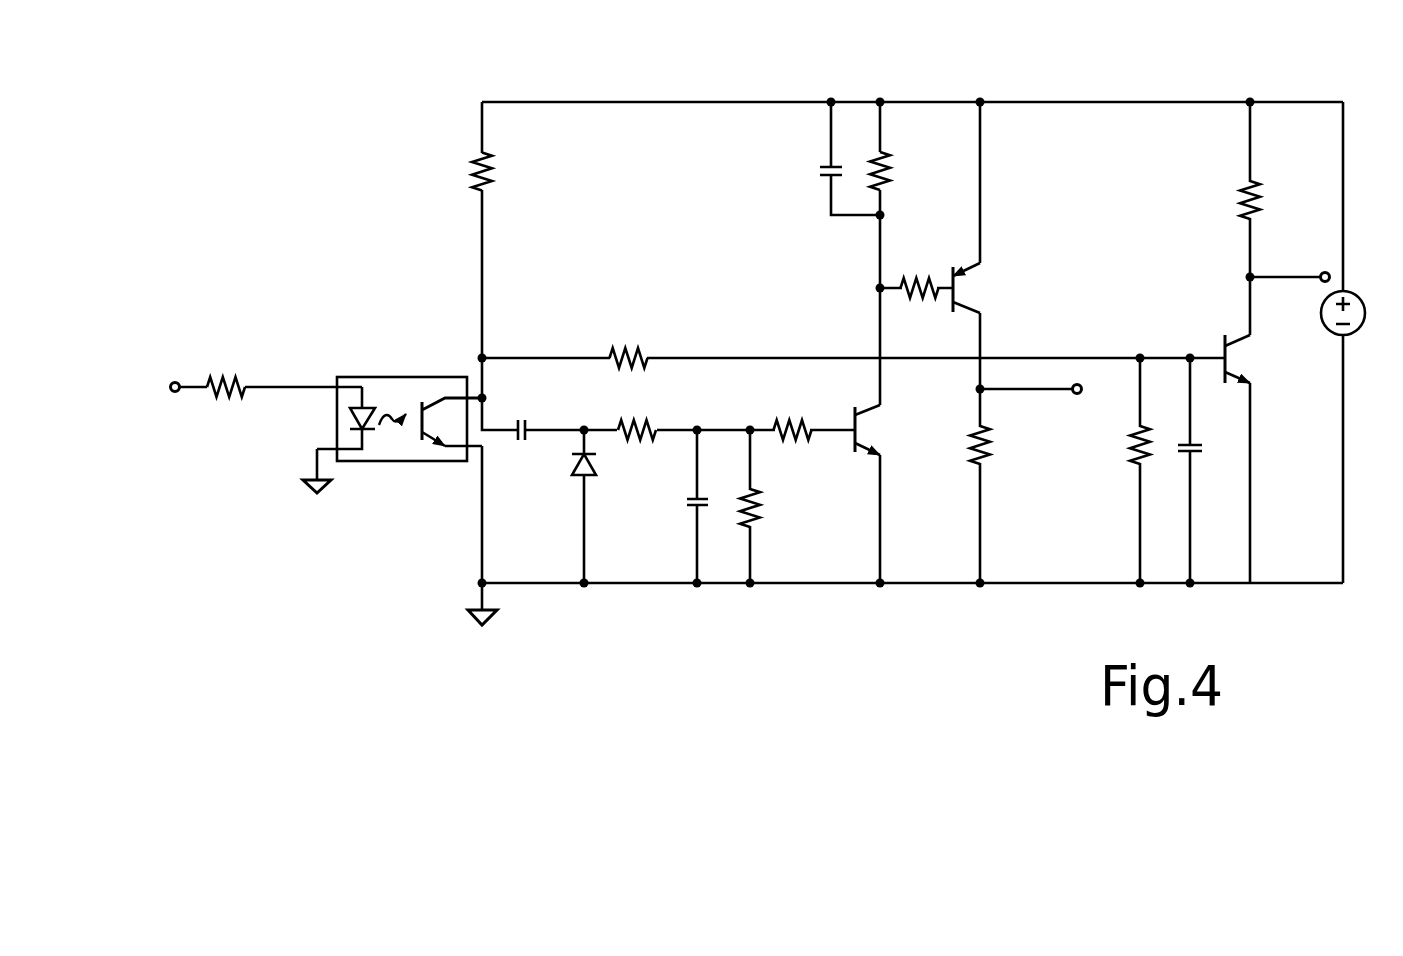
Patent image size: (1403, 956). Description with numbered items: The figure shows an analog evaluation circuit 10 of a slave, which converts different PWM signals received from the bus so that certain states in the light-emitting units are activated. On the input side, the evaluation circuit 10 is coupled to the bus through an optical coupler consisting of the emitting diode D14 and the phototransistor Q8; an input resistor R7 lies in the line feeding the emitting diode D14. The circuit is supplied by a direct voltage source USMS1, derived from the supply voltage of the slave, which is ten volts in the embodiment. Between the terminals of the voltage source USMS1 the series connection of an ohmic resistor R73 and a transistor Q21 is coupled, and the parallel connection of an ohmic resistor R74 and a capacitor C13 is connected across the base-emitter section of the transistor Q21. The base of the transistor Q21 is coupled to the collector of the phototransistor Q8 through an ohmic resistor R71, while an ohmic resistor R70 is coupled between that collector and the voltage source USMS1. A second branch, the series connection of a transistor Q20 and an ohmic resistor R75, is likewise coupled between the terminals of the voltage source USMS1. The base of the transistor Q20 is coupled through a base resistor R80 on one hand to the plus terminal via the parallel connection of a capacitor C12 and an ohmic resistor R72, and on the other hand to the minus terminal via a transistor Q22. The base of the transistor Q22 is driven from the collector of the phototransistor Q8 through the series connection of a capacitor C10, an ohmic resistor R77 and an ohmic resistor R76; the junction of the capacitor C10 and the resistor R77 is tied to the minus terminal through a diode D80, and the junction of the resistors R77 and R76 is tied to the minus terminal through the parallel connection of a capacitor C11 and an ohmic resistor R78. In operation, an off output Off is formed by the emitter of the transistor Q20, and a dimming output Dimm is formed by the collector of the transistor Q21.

The evaluation circuit 10 is at (784, 326).
The input resistor R7 is at (226, 371).
The emitting diode D14 is at (392, 419).
The phototransistor Q8 is at (452, 422).
The ohmic resistor R70 is at (507, 172).
The ohmic resistor R71 is at (628, 344).
The capacitor C10 is at (521, 417).
The ohmic resistor R77 is at (636, 416).
The diode D80 is at (559, 467).
The capacitor C11 is at (675, 500).
The ohmic resistor R78 is at (774, 508).
The ohmic resistor R76 is at (791, 416).
The transistor Q22 is at (890, 430).
The capacitor C12 is at (806, 172).
The ohmic resistor R72 is at (903, 171).
The resistor R80 is at (918, 275).
The transistor Q20 is at (985, 288).
The ohmic resistor R75 is at (1004, 445).
The ohmic resistor R74 is at (1114, 445).
The capacitor C13 is at (1209, 463).
The transistor Q21 is at (1259, 359).
The resistor R73 is at (1274, 200).
The off output Off is at (1044, 375).
The dimming output Dimm is at (1288, 262).
The voltage source USMS1 is at (1359, 320).